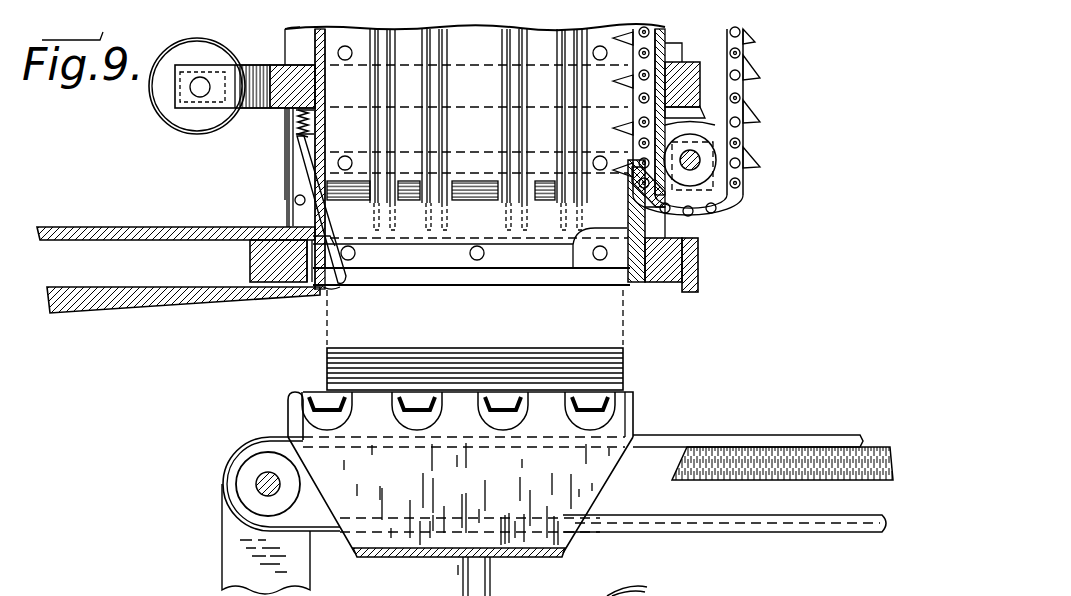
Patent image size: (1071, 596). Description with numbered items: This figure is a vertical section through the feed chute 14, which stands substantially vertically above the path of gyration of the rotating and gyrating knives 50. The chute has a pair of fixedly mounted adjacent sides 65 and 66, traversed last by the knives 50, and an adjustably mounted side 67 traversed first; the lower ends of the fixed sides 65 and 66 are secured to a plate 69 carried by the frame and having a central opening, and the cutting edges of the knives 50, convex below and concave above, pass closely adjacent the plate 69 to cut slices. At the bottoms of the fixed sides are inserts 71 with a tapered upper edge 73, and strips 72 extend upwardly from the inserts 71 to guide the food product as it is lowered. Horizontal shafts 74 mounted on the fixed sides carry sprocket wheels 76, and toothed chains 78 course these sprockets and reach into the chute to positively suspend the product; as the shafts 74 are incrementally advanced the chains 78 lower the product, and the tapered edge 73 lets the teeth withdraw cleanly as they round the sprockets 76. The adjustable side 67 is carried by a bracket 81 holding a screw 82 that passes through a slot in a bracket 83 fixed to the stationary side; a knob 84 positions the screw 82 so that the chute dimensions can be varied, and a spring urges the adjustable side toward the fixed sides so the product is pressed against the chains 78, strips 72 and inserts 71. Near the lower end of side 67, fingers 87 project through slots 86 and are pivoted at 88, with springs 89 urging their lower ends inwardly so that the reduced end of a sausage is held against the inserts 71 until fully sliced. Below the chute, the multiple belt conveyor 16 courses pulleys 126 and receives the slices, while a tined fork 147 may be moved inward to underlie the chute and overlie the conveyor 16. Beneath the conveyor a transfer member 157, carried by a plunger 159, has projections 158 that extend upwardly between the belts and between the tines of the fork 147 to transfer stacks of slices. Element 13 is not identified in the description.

The adjacent side 66 is at (492, 61).
The strips 72 is at (360, 141).
The inserts 71 is at (527, 265).
The knobs 84 is at (180, 45).
The brackets 81 is at (280, 64).
The screws 82 is at (194, 88).
The feed chute 14 is at (298, 134).
The springs 89 is at (290, 145).
The adjacent side 67 is at (288, 164).
The pivot 88 is at (295, 200).
The fingers 87 is at (330, 240).
The slots 86 is at (318, 292).
The plate 13 is at (65, 232).
The knives 50 is at (167, 298).
The plate 69 is at (262, 264).
The adjacent side 65 is at (735, 31).
The brackets 83 is at (700, 76).
The chains 78 is at (745, 80).
The shafts 74 is at (713, 152).
The sprocket wheels 76 is at (700, 162).
The tapered upper edge 73 is at (630, 186).
The projections 158 is at (382, 360).
The tined fork 147 is at (310, 418).
The pulleys 126 is at (245, 490).
The multiple belt conveyor 16 is at (765, 434).
The plunger 159 is at (453, 585).
The transfer member 157 is at (562, 556).